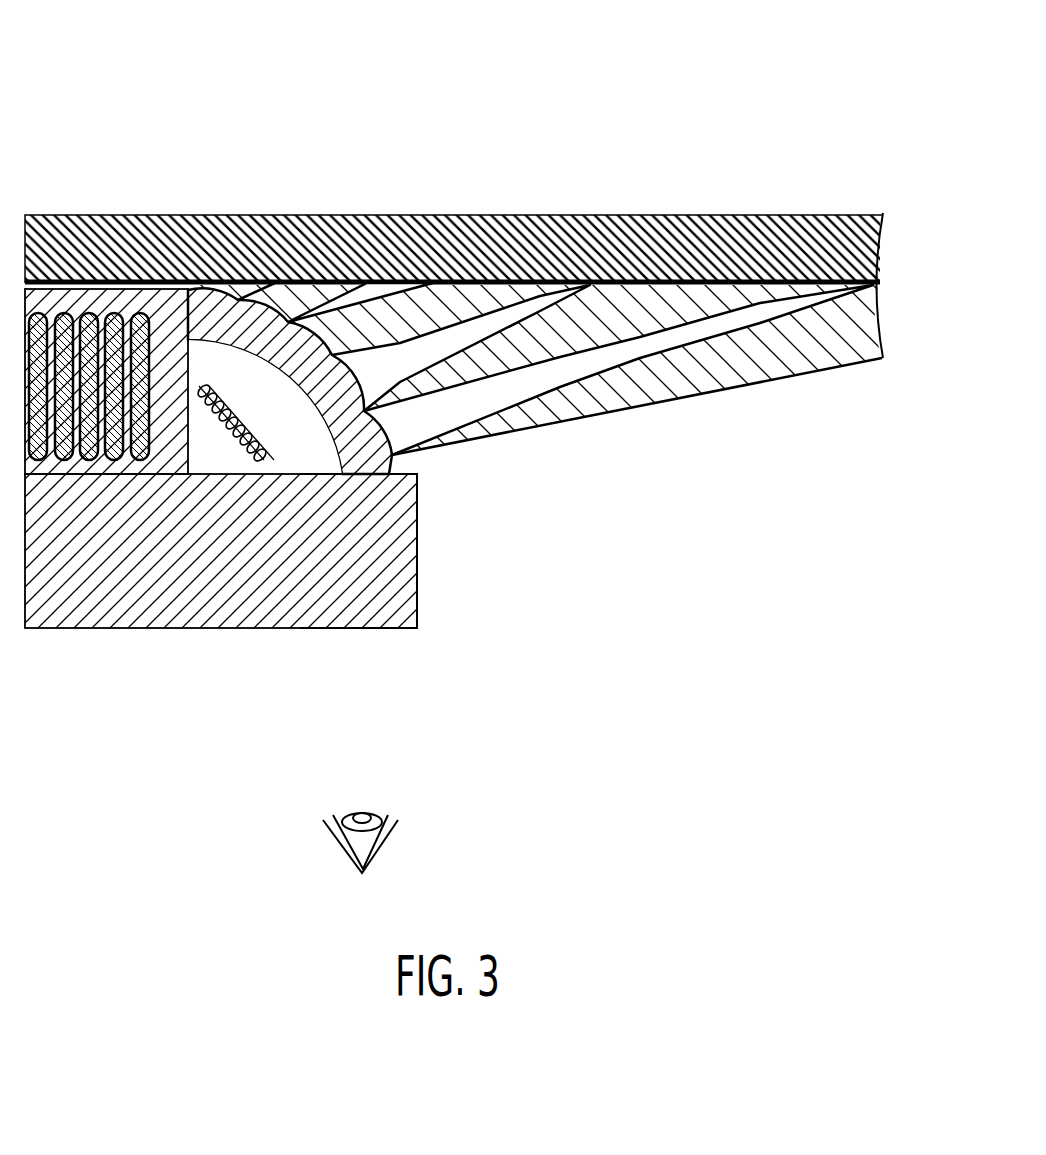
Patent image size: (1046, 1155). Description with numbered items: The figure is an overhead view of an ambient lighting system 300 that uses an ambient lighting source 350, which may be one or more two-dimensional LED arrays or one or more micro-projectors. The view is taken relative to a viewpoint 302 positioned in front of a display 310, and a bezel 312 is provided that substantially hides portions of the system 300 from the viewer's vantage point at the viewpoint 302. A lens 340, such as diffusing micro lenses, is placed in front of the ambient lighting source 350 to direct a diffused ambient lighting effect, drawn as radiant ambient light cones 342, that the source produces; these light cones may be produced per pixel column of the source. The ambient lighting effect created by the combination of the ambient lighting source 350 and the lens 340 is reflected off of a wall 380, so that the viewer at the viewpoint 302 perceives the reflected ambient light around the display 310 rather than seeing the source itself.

The ambient lighting system 300 is at (133, 113).
The wall 380 is at (732, 235).
The radiant ambient light cones 342 is at (583, 330).
The lens 340 is at (373, 460).
The ambient lighting source 350 is at (267, 458).
The display 310 is at (82, 610).
The bezel 312 is at (397, 599).
The viewpoint 302 is at (363, 840).